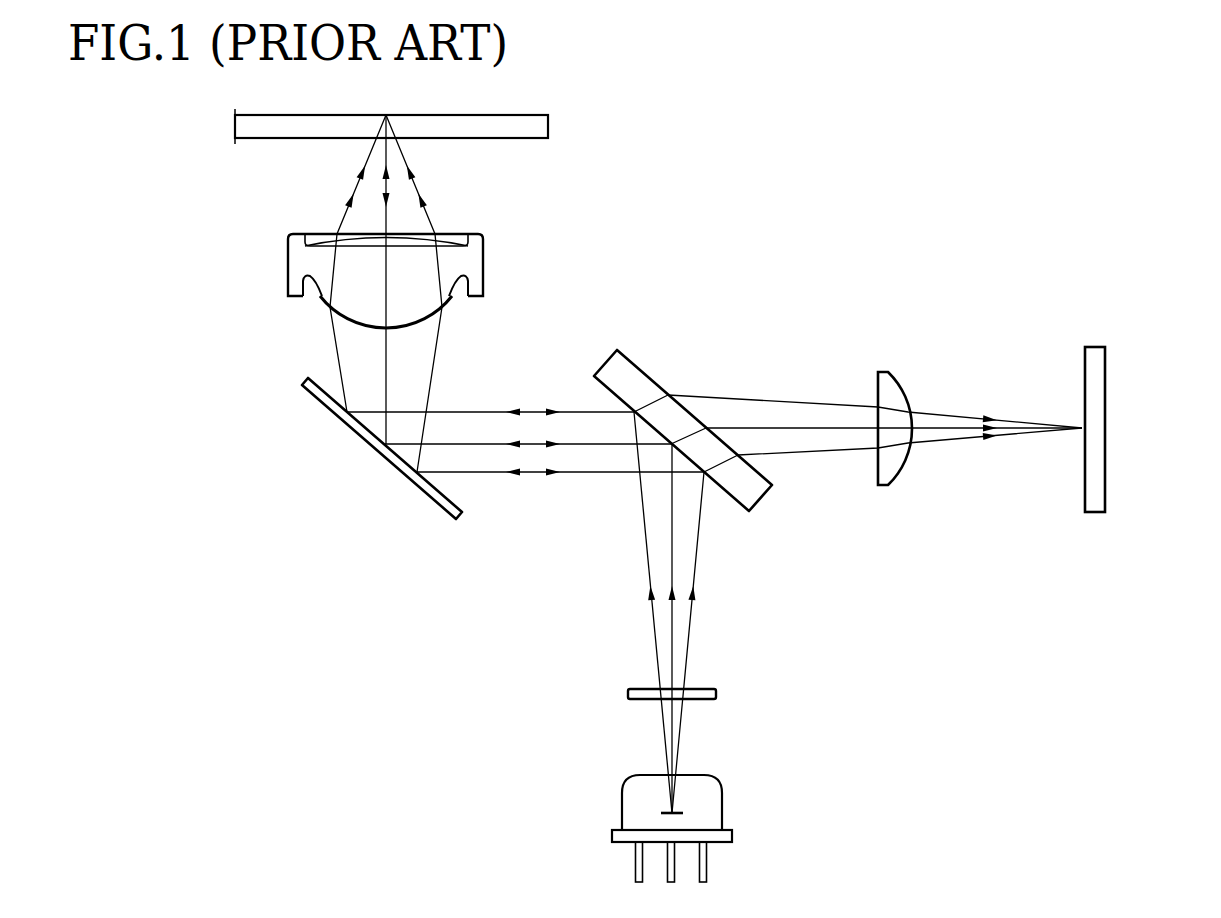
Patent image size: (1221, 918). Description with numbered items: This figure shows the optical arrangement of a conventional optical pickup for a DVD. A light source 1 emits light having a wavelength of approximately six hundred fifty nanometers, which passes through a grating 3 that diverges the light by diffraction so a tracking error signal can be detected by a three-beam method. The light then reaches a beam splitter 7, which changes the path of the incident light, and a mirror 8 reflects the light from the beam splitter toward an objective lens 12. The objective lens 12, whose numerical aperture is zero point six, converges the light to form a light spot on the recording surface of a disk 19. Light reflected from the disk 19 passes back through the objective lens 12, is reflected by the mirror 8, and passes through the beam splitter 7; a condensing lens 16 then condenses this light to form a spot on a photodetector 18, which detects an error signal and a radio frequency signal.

The light source 1 is at (713, 803).
The grating 3 is at (716, 695).
The light beam splitter 7 is at (642, 370).
The mirror 8 is at (390, 466).
The objective lens 12 is at (485, 270).
The condensing lens 16 is at (903, 387).
The photodetector 18 is at (1100, 368).
The disk 19 is at (548, 126).